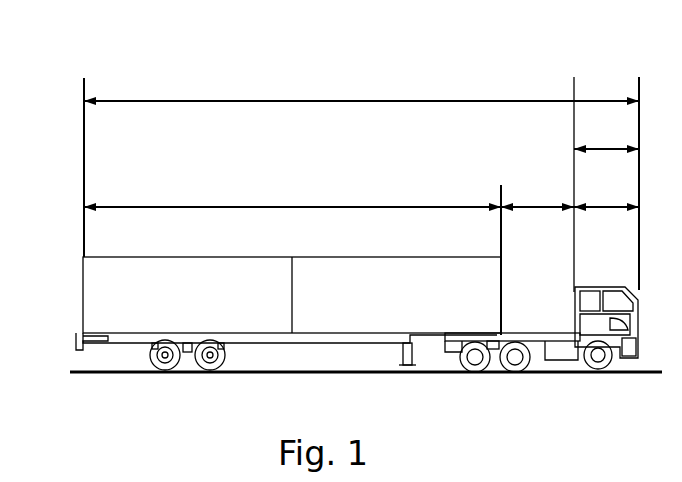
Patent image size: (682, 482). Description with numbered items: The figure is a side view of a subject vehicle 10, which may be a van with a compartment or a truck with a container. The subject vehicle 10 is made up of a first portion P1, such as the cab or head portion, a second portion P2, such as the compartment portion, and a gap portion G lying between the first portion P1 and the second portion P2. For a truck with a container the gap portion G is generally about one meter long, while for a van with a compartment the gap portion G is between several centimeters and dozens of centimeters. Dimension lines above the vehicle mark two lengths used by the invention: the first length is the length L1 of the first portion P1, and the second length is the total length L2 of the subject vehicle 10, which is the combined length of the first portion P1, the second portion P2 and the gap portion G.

The subject vehicle 10 is at (50, 43).
The total length L2 is at (361, 179).
The length of the first portion L1 is at (606, 184).
The second portion P2 is at (292, 254).
The gap portion G is at (537, 190).
The first portion P1 is at (606, 190).